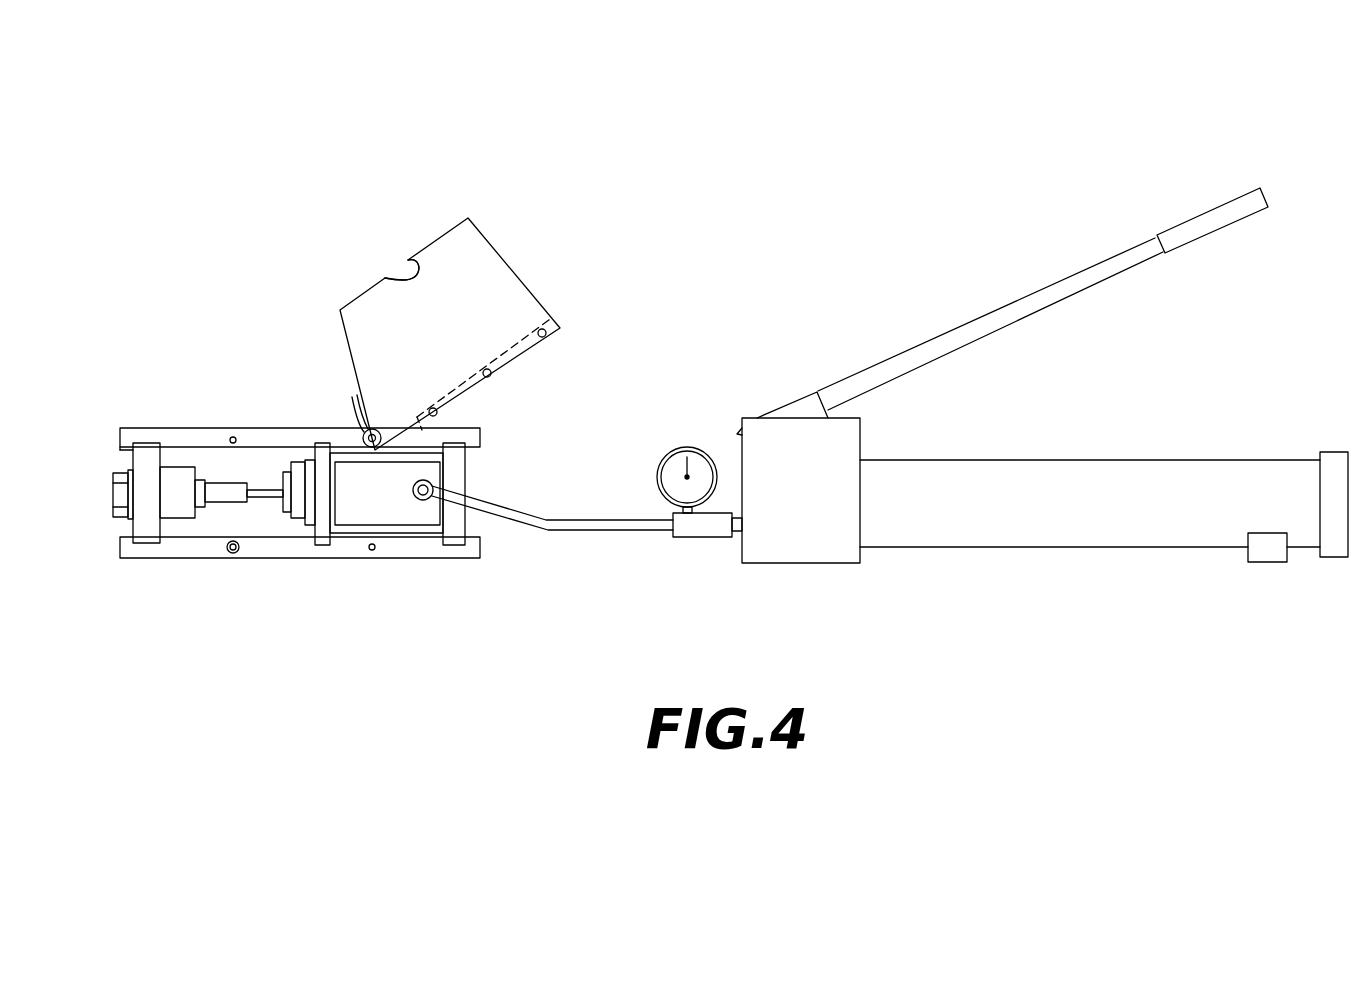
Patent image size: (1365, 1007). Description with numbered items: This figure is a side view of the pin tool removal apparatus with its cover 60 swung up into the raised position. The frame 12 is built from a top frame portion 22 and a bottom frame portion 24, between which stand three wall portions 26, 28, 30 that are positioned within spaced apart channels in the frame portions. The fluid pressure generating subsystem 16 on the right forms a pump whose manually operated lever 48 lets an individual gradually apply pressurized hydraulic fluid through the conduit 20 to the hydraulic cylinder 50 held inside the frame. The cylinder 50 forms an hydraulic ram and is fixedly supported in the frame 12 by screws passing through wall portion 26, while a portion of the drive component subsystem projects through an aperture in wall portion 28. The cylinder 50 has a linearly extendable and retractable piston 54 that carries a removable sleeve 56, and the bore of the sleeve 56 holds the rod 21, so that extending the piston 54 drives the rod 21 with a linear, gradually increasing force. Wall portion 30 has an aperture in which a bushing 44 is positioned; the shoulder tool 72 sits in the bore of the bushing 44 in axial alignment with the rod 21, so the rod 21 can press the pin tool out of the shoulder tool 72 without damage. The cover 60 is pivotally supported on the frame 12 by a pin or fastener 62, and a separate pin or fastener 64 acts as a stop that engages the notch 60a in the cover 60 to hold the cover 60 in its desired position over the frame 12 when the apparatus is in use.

The frame 12 is at (270, 499).
The fluid pressure generating subsystem 16 is at (1175, 430).
The conduit 20 is at (520, 515).
The rod 21 is at (266, 498).
The top frame portion 22 is at (126, 437).
The bottom frame portion 24 is at (270, 573).
The wall portion 26 is at (458, 546).
The wall portion 28 is at (322, 546).
The wall portion 30 is at (138, 460).
The bushing 44 is at (177, 474).
The manually operated lever 48 is at (1012, 310).
The hydraulic cylinder 50 is at (412, 512).
The piston 54 is at (300, 463).
The sleeve 56 is at (283, 477).
The cover 60 is at (443, 334).
The notch 60a is at (400, 272).
The pin or fastener 62 is at (355, 400).
The pin or fastener 64 is at (231, 555).
The shoulder tool 72 is at (209, 504).